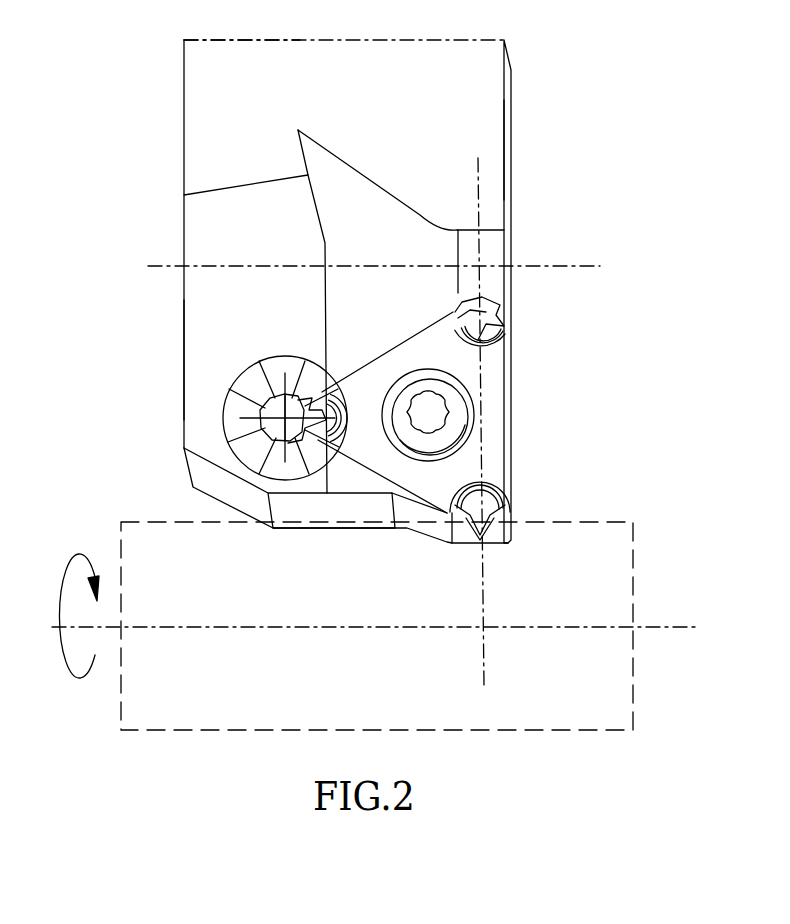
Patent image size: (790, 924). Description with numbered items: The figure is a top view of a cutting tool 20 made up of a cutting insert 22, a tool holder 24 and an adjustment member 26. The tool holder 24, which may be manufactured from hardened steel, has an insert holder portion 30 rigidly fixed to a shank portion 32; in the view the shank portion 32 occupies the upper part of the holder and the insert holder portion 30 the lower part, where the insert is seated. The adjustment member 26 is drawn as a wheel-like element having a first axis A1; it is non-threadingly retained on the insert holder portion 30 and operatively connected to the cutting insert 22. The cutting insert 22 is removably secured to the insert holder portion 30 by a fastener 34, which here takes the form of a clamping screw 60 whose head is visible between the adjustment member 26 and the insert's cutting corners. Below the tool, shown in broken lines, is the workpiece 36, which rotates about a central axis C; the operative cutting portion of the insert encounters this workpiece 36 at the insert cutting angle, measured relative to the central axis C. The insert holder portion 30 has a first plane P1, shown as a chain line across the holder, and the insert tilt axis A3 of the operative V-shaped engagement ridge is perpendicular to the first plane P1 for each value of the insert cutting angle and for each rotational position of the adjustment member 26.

The cutting tool 20 is at (557, 170).
The cutting insert 22 is at (475, 372).
The tool holder 24 is at (222, 225).
The adjustment member 26 is at (228, 407).
The insert holder portion 30 is at (222, 335).
The shank portion 32 is at (222, 94).
The fastener 34 is at (450, 423).
The workpiece 36 is at (600, 570).
The clamping screw 60 is at (460, 447).
The first axis A1 is at (280, 412).
The insert tilt axis A3 is at (478, 427).
The first plane P1 is at (391, 268).
The central axis C is at (383, 629).